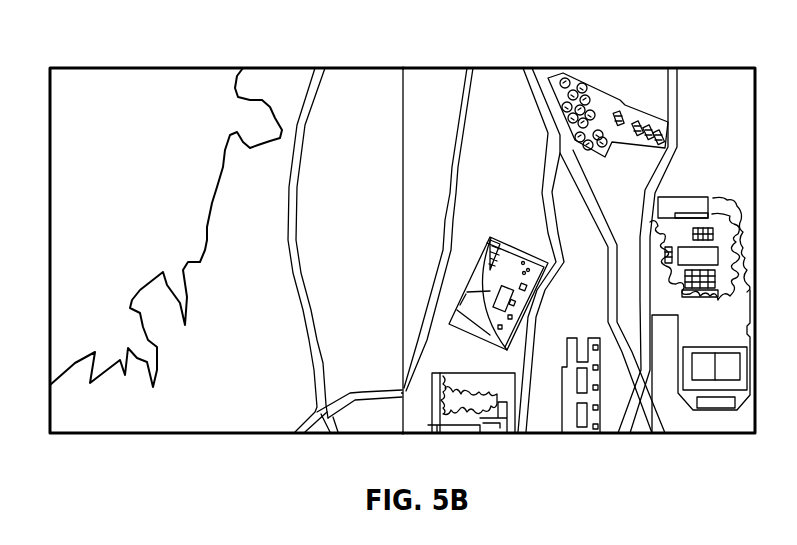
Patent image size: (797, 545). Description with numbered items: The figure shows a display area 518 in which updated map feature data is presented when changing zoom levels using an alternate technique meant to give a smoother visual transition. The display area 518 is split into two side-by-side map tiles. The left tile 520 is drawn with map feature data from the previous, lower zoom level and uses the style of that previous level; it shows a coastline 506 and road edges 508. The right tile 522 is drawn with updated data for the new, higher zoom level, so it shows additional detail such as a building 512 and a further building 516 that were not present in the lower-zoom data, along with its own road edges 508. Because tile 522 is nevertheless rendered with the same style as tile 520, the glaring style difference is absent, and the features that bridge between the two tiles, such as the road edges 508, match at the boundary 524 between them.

The display area 518 is at (622, 43).
The tile 520 is at (102, 95).
The tile 522 is at (448, 95).
The coastline 506 is at (212, 206).
The road edges 508 is at (312, 355).
The building 512 is at (515, 247).
The point 516 is at (598, 345).
The boundary 524 is at (402, 396).